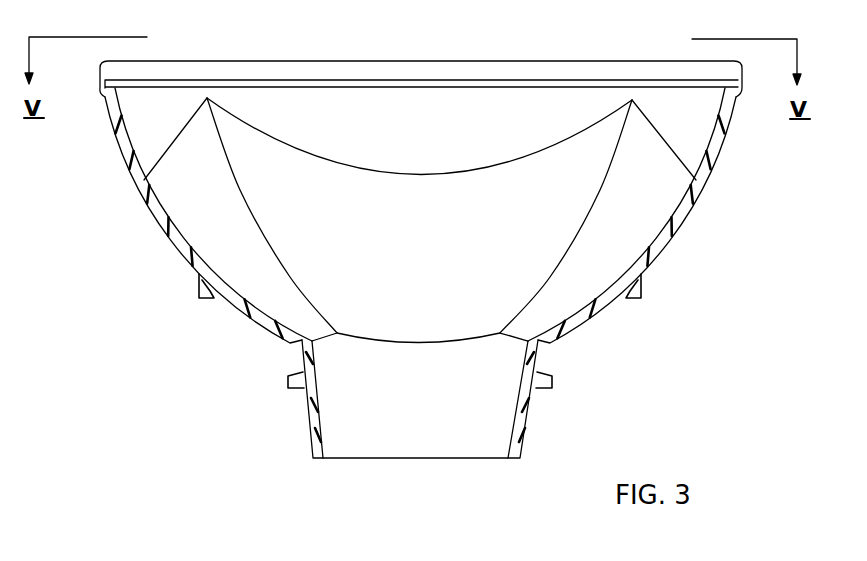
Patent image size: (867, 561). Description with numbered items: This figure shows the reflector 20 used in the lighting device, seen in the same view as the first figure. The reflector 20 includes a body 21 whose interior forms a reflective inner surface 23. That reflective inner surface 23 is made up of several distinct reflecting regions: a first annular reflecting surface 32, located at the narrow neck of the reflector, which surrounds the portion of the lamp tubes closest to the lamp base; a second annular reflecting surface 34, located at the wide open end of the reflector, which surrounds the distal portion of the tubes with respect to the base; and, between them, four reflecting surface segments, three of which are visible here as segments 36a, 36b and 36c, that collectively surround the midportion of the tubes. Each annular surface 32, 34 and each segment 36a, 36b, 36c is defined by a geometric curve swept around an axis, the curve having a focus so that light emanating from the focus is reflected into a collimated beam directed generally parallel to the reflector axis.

The reflector 20 is at (617, 61).
The body 21 is at (593, 320).
The reflective inner surface 23 is at (125, 152).
The first annular reflecting surface 32 is at (318, 403).
The second annular reflecting surface 34 is at (287, 110).
The reflecting surface segment 36a is at (647, 207).
The reflecting surface segment 36b is at (393, 202).
The reflecting surface segment 36c is at (200, 217).